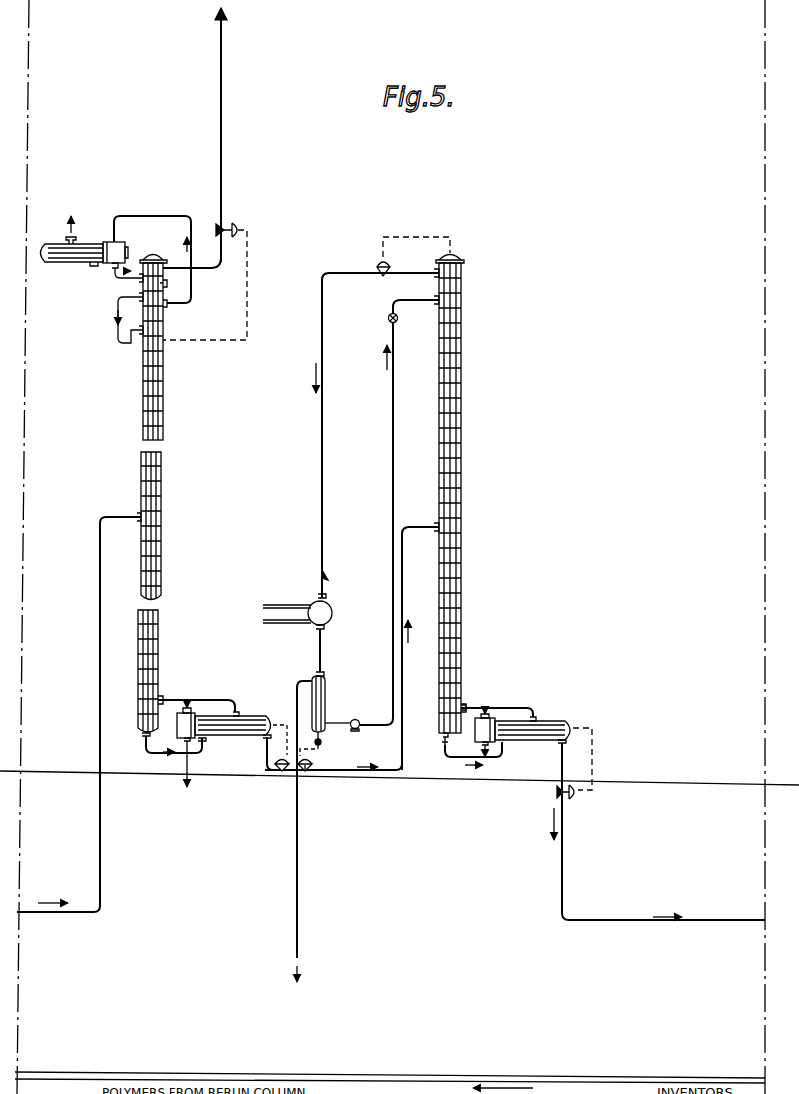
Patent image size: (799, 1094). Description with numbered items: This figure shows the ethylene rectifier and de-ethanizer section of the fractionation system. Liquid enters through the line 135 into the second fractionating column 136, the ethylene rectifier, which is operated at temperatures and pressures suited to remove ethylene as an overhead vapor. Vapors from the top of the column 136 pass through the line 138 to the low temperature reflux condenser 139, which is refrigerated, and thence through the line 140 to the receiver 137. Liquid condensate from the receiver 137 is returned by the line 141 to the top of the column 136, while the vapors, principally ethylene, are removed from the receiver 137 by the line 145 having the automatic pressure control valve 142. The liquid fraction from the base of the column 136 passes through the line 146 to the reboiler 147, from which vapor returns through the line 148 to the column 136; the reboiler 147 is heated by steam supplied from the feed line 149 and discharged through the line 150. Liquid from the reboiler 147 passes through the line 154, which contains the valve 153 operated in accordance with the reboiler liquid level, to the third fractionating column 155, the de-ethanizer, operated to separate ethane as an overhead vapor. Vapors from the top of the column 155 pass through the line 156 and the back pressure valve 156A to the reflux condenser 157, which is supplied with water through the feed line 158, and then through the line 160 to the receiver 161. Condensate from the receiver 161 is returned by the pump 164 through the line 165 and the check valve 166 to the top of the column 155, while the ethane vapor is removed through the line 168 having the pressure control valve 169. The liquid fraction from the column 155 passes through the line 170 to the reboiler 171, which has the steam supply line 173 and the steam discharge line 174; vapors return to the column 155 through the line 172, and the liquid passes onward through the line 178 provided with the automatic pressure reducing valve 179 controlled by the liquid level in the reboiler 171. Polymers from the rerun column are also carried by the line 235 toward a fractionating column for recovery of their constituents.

The line 135 is at (93, 914).
The second fractionating column 136 is at (161, 389).
The receiver 137 is at (163, 284).
The line 138 is at (189, 304).
The low temperature reflux condenser 139 is at (94, 243).
The line 140 is at (116, 281).
The line 141 is at (115, 346).
The automatic pressure control valve 142 is at (238, 232).
The line 145 is at (223, 118).
The line 146 is at (163, 760).
The reboiler 147 is at (262, 715).
The line 148 is at (171, 702).
The feed line 149 is at (192, 700).
The line 150 is at (193, 767).
The valve 153 is at (280, 774).
The line 154 is at (404, 768).
The third fractionating column 155 is at (461, 458).
The line 156 is at (324, 462).
The back pressure valve 156A is at (383, 258).
The reflux condenser 157 is at (331, 606).
The feed line 158 is at (280, 604).
The line 160 is at (324, 656).
The receiver 161 is at (326, 717).
The pump 164 is at (355, 730).
The line 165 is at (400, 530).
The check valve 166 is at (388, 318).
The line 168 is at (299, 868).
The pressure control valve 169 is at (314, 766).
The line 170 is at (460, 770).
The reboiler 171 is at (568, 718).
The line 172 is at (529, 707).
The steam supply line 173 is at (488, 706).
The steam discharge line 174 is at (492, 752).
The line 178 is at (565, 890).
The automatic pressure reducing valve 179 is at (578, 794).
The line 235 is at (358, 1073).